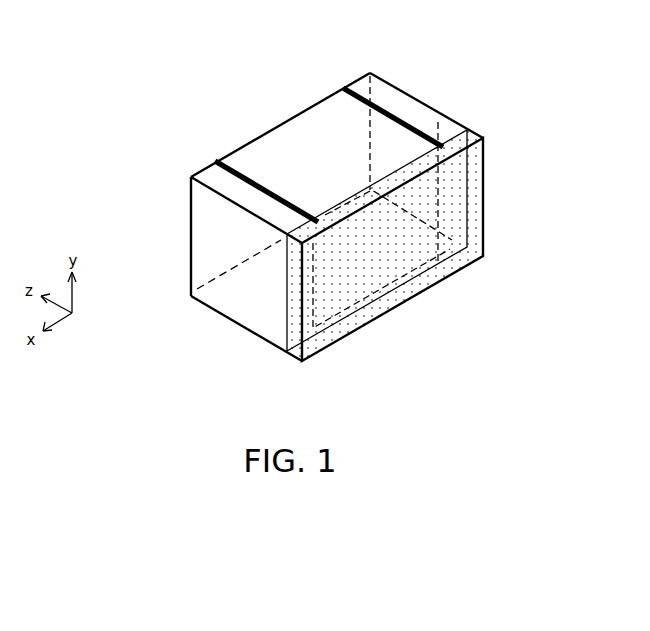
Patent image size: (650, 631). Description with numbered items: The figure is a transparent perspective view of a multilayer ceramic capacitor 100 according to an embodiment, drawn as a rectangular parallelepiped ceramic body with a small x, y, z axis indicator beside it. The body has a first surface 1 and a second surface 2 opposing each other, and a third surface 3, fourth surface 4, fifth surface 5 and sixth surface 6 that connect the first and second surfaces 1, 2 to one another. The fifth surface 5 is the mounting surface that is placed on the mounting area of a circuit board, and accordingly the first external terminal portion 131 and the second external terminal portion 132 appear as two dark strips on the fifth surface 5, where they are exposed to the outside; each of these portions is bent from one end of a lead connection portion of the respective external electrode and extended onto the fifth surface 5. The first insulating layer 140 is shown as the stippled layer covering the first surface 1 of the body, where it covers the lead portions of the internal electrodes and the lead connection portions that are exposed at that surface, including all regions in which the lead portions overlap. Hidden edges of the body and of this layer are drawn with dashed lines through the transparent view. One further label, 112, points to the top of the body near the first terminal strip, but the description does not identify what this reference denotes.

The multilayer ceramic capacitor 100 is at (147, 30).
The first surface 1 is at (407, 270).
The second surface 2 is at (191, 216).
The third surface 3 is at (191, 265).
The fourth surface 4 is at (405, 115).
The fifth surface 5 is at (307, 133).
The sixth surface 6 is at (273, 312).
The dielectric layer 112 is at (237, 190).
The first external terminal portion 131 is at (268, 183).
The second external terminal portion 132 is at (432, 137).
The first insulating layer 140 is at (367, 322).